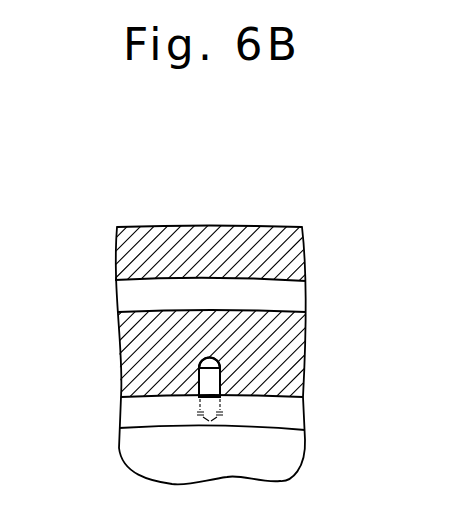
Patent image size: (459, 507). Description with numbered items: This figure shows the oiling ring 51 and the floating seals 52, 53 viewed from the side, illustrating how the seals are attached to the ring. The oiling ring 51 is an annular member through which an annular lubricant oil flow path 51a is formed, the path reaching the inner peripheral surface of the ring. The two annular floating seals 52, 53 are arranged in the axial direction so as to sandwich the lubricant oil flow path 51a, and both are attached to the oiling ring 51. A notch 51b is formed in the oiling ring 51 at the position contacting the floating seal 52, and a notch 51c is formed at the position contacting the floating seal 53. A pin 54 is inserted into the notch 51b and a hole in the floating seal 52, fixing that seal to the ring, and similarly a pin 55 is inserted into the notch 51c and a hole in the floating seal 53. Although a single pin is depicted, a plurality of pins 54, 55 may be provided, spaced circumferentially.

The oiling ring 51 is at (255, 227).
The lubricant oil flow path 51a is at (307, 297).
The notch 51b is at (200, 357).
The notch 51c is at (125, 378).
The pin 54 is at (213, 378).
The pin 55 is at (210, 390).
The floating seal 52 is at (297, 413).
The floating seal 53 is at (212, 412).